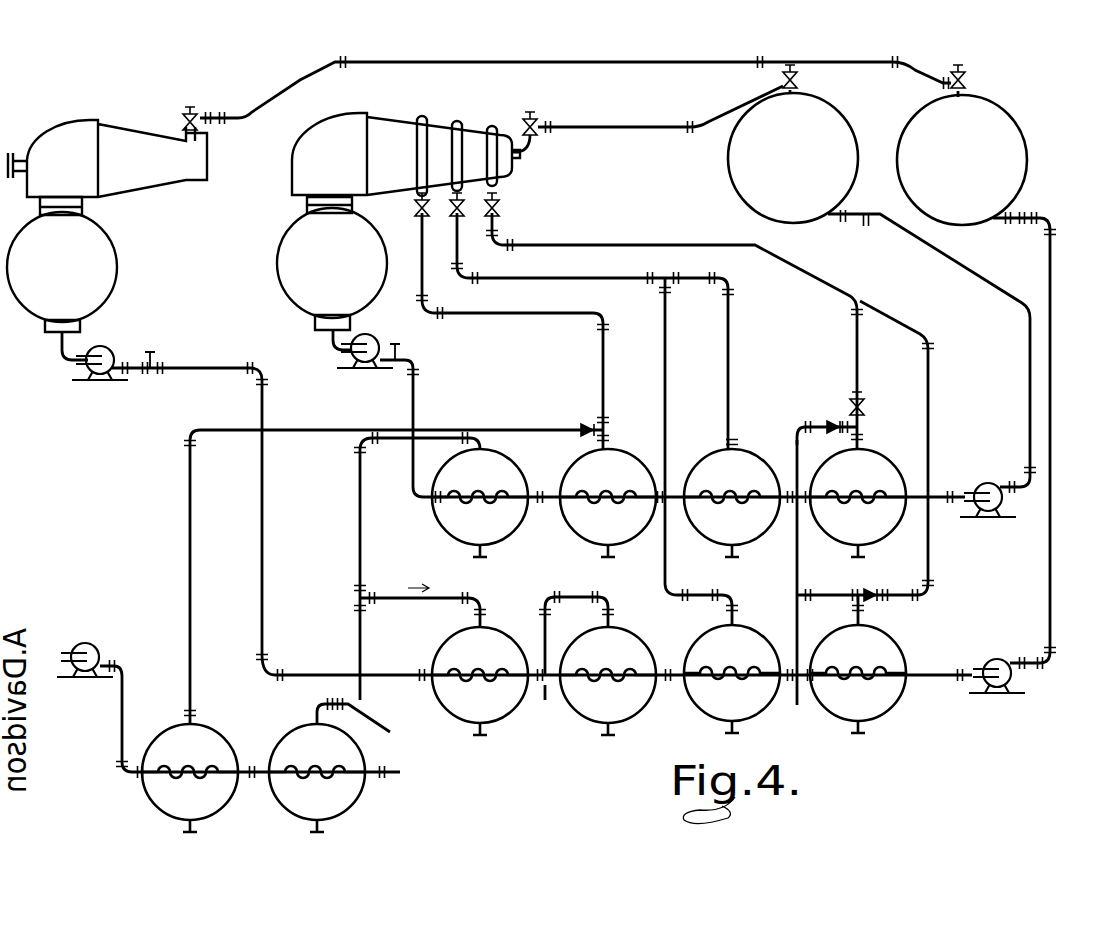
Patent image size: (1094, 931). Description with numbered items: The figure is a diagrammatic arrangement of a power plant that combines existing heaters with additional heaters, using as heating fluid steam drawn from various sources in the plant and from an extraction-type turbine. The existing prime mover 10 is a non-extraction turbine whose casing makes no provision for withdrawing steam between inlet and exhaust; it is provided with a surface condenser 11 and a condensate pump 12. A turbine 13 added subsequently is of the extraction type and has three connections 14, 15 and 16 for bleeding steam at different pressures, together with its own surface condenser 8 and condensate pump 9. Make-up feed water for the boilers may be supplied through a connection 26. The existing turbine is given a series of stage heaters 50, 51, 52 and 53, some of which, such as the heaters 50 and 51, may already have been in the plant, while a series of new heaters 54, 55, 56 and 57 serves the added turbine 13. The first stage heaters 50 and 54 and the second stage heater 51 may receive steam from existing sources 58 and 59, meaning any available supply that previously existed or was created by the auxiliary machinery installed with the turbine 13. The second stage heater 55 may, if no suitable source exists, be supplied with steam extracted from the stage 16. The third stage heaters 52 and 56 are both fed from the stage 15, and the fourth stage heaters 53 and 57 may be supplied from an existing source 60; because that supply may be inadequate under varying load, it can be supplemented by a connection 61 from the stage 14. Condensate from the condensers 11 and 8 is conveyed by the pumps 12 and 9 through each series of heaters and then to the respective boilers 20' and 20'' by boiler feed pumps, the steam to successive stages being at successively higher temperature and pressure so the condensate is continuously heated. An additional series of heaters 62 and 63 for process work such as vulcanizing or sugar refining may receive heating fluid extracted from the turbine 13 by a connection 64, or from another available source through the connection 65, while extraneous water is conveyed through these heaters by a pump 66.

The surface condenser 8 is at (287, 246).
The condensate pump 9 is at (369, 342).
The existing prime mover 10 is at (128, 152).
The surface condenser 11 is at (104, 250).
The condensate pump 12 is at (101, 348).
The turbine 13 is at (388, 132).
The bleeding connection 14 is at (493, 192).
The bleeding connection 15 is at (458, 192).
The bleeding connection 16 is at (423, 192).
The boiler 20' is at (777, 158).
The boiler 20'' is at (946, 160).
The make-up feed water connection 26 is at (152, 356).
The first stage heater 50 is at (490, 641).
The second stage heater 51 is at (628, 646).
The third stage heater 52 is at (756, 649).
The fourth stage heater 53 is at (882, 643).
The first stage heater 54 is at (508, 476).
The second stage heater 55 is at (632, 471).
The third stage heater 56 is at (756, 473).
The fourth stage heater 57 is at (882, 473).
The existing steam source 58 is at (366, 689).
The existing steam source 59 is at (545, 700).
The existing steam source 60 is at (797, 705).
The connection 61 is at (860, 356).
The heater 62 is at (216, 749).
The heater 63 is at (350, 790).
The connection 64 is at (190, 630).
The connection 65 is at (388, 726).
The pump 66 is at (86, 680).